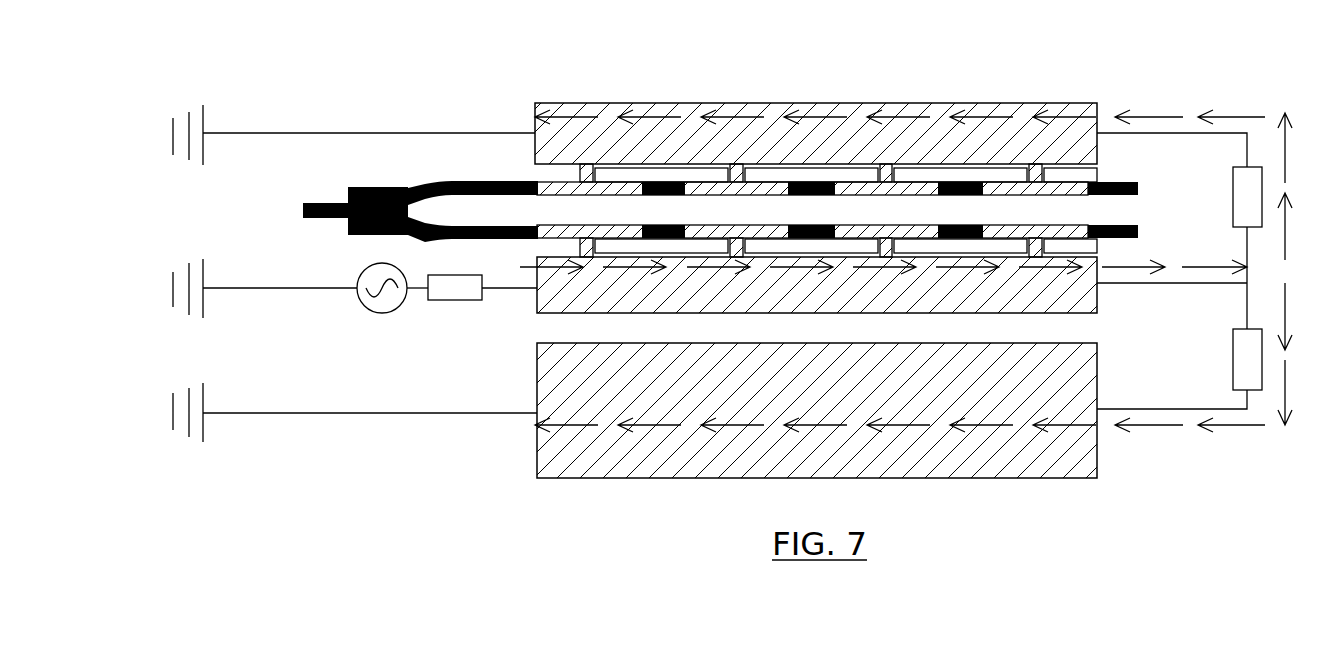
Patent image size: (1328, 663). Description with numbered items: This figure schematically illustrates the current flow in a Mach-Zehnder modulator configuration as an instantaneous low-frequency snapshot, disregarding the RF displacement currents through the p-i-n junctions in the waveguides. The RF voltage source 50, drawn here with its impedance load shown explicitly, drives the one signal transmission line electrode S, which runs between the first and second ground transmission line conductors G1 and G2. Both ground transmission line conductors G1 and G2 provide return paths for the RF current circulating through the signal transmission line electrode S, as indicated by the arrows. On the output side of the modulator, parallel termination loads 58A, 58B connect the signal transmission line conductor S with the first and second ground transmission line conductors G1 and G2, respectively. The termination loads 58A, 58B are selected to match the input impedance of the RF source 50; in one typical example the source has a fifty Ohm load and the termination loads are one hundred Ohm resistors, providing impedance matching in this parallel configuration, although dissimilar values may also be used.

The first ground transmission line conductor G1 is at (1034, 103).
The second ground transmission line conductor G2 is at (1050, 478).
The signal transmission line electrode S is at (1080, 313).
The termination load 58A is at (1251, 192).
The termination load 58B is at (1245, 360).
The RF source 50 is at (490, 326).